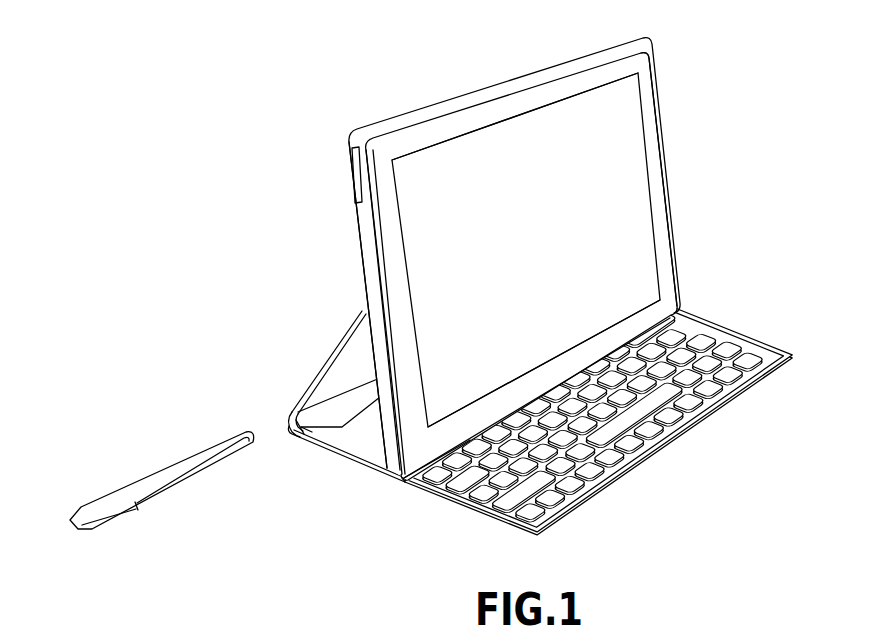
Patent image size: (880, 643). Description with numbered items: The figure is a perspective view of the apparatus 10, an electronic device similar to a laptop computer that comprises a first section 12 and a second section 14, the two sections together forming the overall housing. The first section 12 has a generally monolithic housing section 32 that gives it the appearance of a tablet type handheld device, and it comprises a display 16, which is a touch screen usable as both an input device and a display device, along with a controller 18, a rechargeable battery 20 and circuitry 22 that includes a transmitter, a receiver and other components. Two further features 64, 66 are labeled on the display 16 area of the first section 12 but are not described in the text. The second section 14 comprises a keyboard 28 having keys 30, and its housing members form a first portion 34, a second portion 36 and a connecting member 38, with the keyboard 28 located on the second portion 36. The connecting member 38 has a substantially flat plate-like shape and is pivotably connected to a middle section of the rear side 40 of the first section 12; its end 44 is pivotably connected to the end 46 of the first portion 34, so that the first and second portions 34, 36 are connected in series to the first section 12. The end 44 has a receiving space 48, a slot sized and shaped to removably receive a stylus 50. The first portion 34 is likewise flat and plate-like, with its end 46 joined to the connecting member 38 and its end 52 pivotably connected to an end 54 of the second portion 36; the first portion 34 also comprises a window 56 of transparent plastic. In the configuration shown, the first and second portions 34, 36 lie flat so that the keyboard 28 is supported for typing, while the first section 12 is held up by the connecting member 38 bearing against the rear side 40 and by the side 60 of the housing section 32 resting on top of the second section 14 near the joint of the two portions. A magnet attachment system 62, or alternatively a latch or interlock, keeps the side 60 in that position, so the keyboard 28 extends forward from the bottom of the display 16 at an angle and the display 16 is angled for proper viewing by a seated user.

The apparatus 10 is at (262, 140).
The first section 12 is at (512, 290).
The second section 14 is at (688, 437).
The display 16 is at (628, 124).
The controller 18 is at (365, 242).
The rechargeable battery 20 is at (372, 285).
The circuitry 22 is at (647, 232).
The keyboard 28 is at (567, 517).
The keys 30 is at (647, 330).
The housing section 32 is at (388, 121).
The first portion 34 is at (330, 455).
The second portion 36 is at (599, 417).
The connecting member 38 is at (322, 368).
The rear side 40 is at (355, 220).
The end 44 is at (305, 437).
The end 46 is at (302, 445).
The receiving space 48 is at (298, 413).
The stylus 50 is at (100, 503).
The end 52 is at (394, 482).
The end 54 is at (400, 484).
The window 56 is at (368, 430).
The side 60 is at (438, 450).
The magnet attachment system 62 is at (652, 318).
The display 64 is at (578, 250).
The touch screen 66 is at (487, 137).